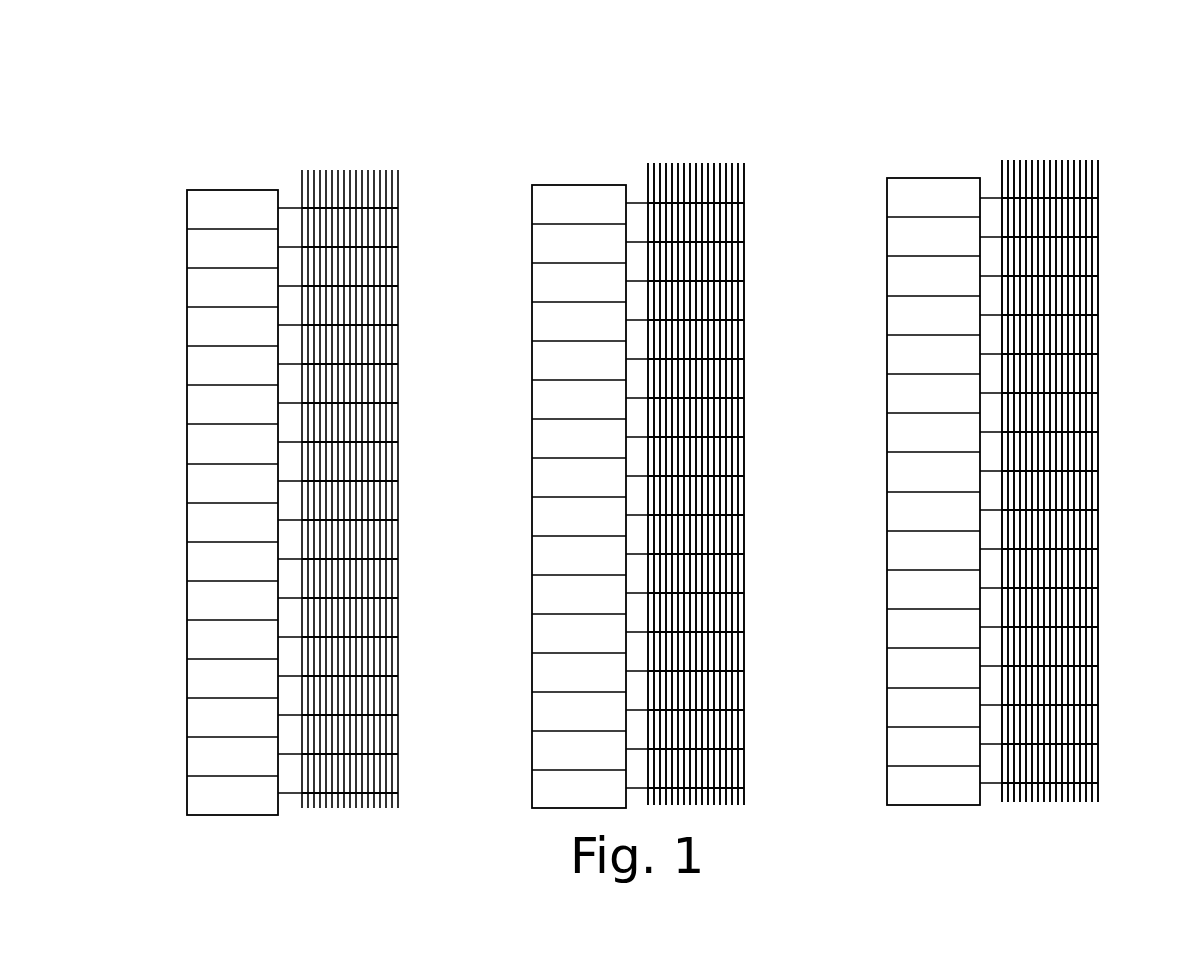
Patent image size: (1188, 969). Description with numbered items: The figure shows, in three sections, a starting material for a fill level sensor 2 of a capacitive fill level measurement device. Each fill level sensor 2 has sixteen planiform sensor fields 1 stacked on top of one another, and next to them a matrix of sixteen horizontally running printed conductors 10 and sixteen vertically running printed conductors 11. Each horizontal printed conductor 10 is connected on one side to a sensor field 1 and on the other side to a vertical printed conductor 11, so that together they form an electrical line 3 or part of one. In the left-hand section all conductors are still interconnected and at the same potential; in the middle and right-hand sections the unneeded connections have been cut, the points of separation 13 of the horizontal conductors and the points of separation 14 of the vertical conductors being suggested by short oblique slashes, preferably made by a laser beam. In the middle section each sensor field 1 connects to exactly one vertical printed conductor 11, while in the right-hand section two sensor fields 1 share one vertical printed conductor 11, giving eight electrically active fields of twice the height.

The sensor field 1 is at (941, 288).
The fill level sensor 2 is at (871, 803).
The electrical line 3 is at (949, 102).
The horizontally running printed conductor 10 is at (281, 205).
The vertically running printed conductor 11 is at (392, 172).
The point of separation of the horizontally running printed conductors 13 is at (737, 470).
The point of separation of the vertically running printed conductors 14 is at (647, 410).